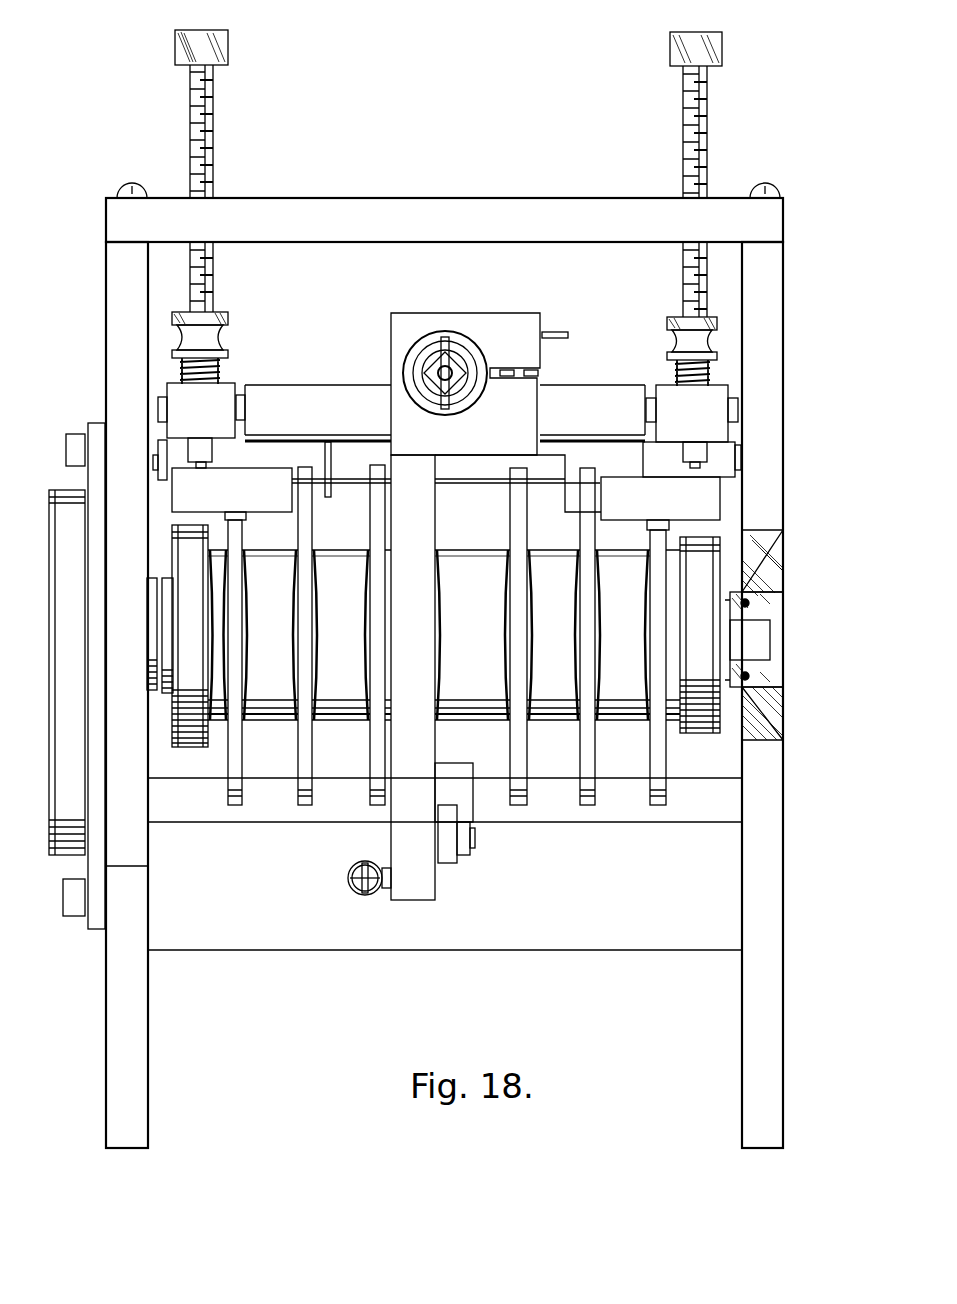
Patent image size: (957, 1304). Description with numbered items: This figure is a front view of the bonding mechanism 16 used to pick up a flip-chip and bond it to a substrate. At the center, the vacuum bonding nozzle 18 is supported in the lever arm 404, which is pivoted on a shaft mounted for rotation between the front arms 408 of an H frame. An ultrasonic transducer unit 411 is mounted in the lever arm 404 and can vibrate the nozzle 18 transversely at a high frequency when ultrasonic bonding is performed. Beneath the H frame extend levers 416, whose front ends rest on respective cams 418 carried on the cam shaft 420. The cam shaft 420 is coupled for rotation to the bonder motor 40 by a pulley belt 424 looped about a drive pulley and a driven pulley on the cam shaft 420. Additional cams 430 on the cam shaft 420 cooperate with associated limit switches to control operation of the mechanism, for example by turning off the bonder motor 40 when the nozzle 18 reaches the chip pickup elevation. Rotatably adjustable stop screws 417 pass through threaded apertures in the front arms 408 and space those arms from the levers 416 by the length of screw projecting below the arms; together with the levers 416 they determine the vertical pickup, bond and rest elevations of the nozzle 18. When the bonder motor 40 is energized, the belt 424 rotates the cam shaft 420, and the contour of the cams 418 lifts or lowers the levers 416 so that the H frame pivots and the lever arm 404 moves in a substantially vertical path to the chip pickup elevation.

The bonding mechanism 16 is at (337, 1005).
The vacuum bonding nozzle 18 is at (442, 345).
The bonder motor 40 is at (68, 495).
The lever arm 404 is at (425, 750).
The front arms of H frame 408 is at (219, 398).
The ultrasonic transducer unit 411 is at (466, 358).
The levers 416 is at (251, 501).
The stop screws 417 is at (206, 163).
The cams 418 is at (236, 773).
The cam shaft 420 is at (466, 558).
The pulley belt 424 is at (187, 746).
The additional cams 430 is at (373, 732).